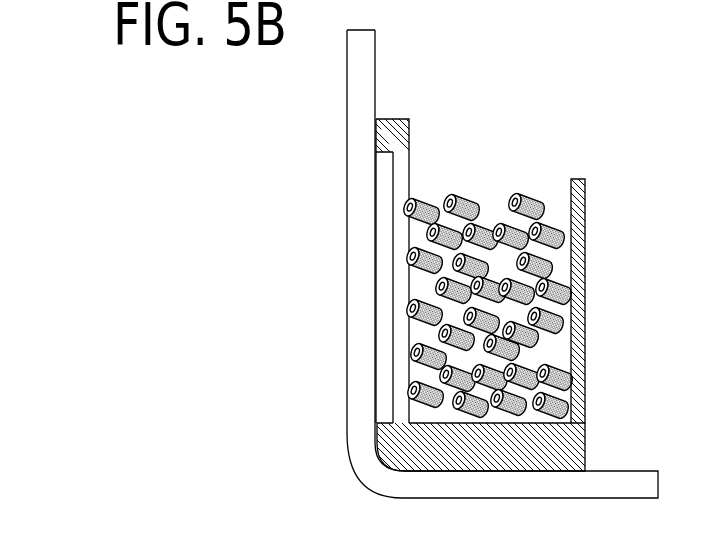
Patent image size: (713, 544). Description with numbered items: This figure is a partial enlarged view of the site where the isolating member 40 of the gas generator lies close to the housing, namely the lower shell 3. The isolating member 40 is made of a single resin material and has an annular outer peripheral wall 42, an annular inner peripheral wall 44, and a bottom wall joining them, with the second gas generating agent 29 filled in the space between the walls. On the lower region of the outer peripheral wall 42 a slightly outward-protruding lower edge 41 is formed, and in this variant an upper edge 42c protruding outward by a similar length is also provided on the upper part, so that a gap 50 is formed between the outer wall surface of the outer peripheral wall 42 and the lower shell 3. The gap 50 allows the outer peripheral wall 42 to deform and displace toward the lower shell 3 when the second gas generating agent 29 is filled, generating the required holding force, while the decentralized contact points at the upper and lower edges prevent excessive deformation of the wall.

The lower shell 3 is at (459, 286).
The second gas generating agent 29 is at (533, 196).
The isolating member 40 is at (587, 445).
The lower edge 41 is at (376, 486).
The outer peripheral wall 42 is at (411, 188).
The upper edge 42c is at (392, 119).
The inner peripheral wall 44 is at (587, 224).
The gap 50 is at (383, 256).